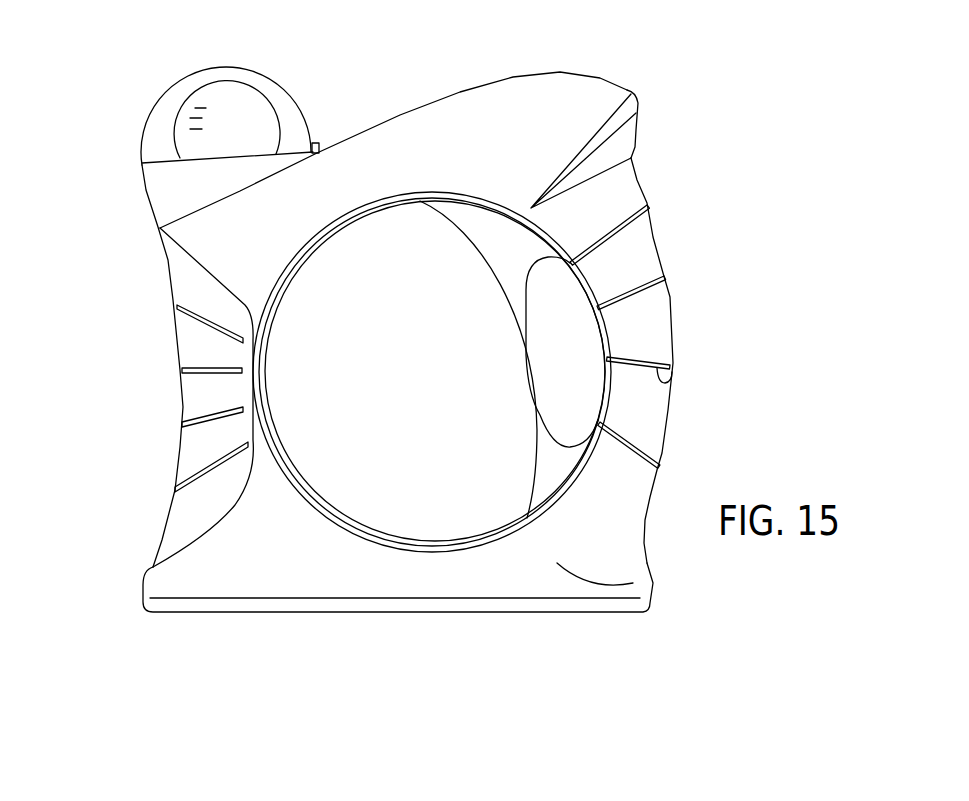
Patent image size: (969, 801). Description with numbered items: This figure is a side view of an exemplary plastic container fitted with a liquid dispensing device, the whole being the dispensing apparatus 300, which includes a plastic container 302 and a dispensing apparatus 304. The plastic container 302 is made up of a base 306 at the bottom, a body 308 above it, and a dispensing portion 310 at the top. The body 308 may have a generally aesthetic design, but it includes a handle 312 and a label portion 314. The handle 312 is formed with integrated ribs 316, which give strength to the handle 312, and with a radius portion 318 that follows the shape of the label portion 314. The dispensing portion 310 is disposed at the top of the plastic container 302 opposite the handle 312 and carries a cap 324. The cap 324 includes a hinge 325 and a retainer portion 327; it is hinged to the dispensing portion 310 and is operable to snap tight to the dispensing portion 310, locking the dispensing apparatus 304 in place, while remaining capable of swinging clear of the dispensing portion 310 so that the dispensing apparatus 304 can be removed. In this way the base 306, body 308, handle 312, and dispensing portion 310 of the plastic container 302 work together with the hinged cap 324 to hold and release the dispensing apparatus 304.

The dispensing apparatus 300 is at (692, 84).
The plastic container 302 is at (170, 293).
The dispensing apparatus 304 is at (155, 86).
The base 306 is at (198, 614).
The body 308 is at (182, 402).
The dispensing portion 310 is at (146, 196).
The handle 312 is at (643, 188).
The label portion 314 is at (378, 420).
The integrated ribs 316 is at (673, 380).
The radius portion 318 is at (670, 415).
The cap 324 is at (300, 112).
The hinge 325 is at (326, 139).
The retainer portion 327 is at (143, 158).